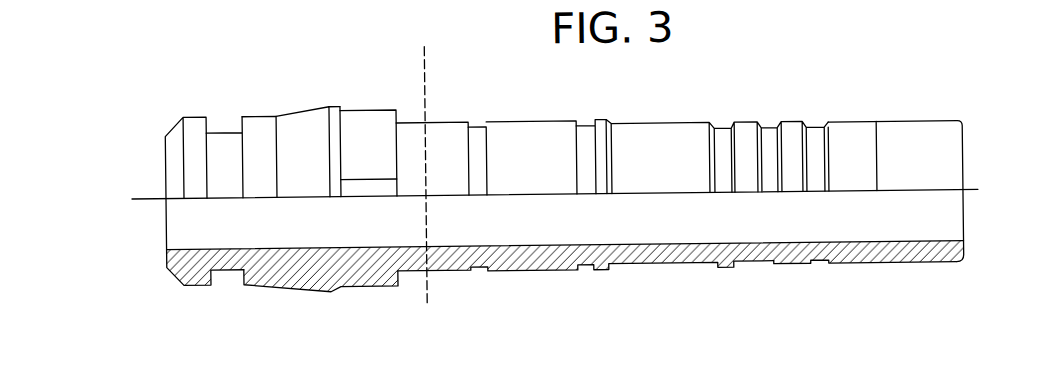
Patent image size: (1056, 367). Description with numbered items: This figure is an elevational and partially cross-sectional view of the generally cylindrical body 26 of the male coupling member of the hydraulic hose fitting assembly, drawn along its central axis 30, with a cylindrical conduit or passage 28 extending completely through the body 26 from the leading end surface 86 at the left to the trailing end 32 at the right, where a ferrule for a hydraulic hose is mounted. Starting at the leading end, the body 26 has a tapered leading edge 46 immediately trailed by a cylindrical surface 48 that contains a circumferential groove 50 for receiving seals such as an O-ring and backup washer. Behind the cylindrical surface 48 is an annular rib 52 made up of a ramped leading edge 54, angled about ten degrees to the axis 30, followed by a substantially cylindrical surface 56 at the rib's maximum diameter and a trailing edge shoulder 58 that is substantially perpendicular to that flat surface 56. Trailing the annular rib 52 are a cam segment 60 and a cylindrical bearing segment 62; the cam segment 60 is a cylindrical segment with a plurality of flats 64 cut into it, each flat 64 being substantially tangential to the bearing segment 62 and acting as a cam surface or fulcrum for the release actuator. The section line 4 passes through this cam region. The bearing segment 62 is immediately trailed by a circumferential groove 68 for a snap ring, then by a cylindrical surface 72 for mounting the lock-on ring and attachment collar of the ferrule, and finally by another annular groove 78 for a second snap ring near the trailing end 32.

The section line 4- 4 is at (426, 306).
The generally cylindrical body 26 is at (583, 270).
The cylindrical conduit or passage 28 is at (630, 250).
The central axis 30 is at (933, 197).
The trailing end 32 is at (930, 285).
The tapered leading edge 46 is at (182, 119).
The cylindrical surface 48 is at (256, 117).
The circumferential groove 50 is at (228, 133).
The annular rib 52 is at (331, 84).
The ramped leading edge 54 is at (303, 113).
The substantially cylindrical surface 56 is at (337, 109).
The trailing edge shoulder 58 is at (343, 112).
The cam segment 60 is at (366, 315).
The cylindrical bearing segment 62 is at (445, 126).
The flat 64 is at (380, 155).
The circumferential groove 68 is at (480, 131).
The cylindrical surface 72 is at (542, 137).
The annular groove 78 is at (583, 136).
The leading end surface 86 is at (165, 257).